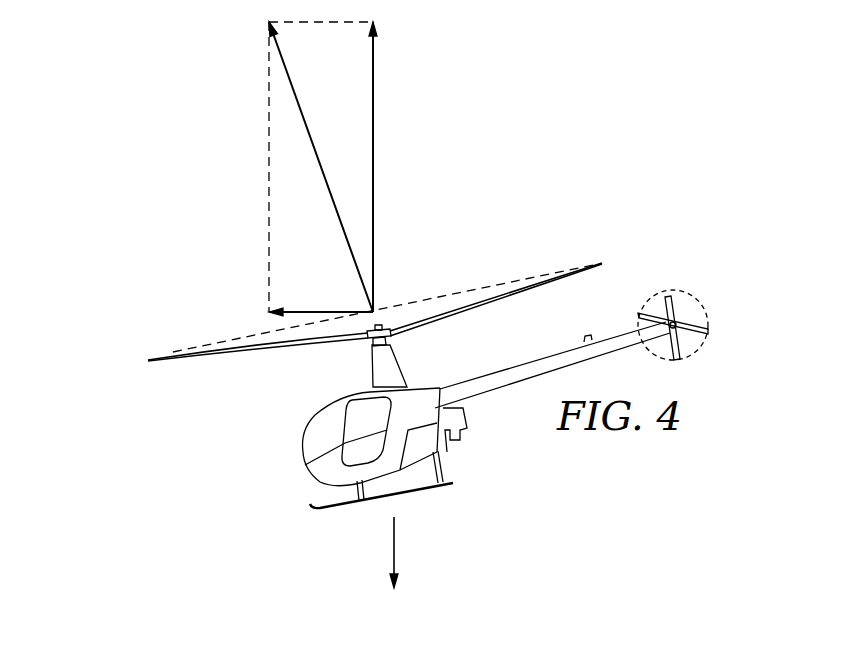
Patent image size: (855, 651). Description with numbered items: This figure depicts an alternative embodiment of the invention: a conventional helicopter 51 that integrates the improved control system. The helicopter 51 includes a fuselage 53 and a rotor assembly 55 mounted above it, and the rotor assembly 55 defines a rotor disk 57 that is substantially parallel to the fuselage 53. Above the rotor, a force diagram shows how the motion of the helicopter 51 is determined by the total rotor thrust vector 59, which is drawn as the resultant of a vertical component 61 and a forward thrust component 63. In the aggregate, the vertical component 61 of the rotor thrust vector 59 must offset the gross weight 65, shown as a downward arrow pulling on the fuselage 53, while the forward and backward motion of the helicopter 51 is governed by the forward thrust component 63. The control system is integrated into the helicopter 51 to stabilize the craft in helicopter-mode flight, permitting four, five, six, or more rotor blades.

The helicopter 51 is at (428, 354).
The fuselage 53 is at (302, 453).
The rotor assembly 55 is at (232, 352).
The rotor disk 57 is at (453, 293).
The rotor thrust vector 59 is at (324, 177).
The vertical component 61 is at (375, 163).
The forward thrust component 63 is at (322, 307).
The gross weight 65 is at (395, 548).